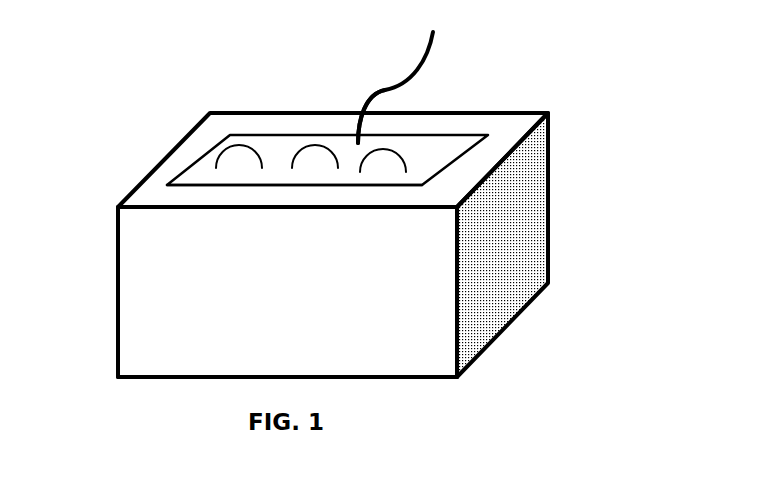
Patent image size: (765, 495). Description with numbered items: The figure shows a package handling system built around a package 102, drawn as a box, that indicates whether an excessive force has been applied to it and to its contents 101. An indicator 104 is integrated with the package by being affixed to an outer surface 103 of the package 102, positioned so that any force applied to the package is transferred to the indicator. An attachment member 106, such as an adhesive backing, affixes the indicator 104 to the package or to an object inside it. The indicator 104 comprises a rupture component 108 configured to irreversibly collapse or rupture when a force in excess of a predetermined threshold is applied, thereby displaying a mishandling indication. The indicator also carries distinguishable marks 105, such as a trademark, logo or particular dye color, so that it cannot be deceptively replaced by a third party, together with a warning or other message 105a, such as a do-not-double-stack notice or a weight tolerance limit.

The contents 101 is at (155, 265).
The package 102 is at (192, 360).
The outer surface 103 is at (507, 132).
The indicator 104 is at (425, 157).
The distinguishable marks 105 is at (448, 75).
The message 105a is at (371, 116).
The attachment member 106 is at (318, 185).
The rupture component 108 is at (243, 155).